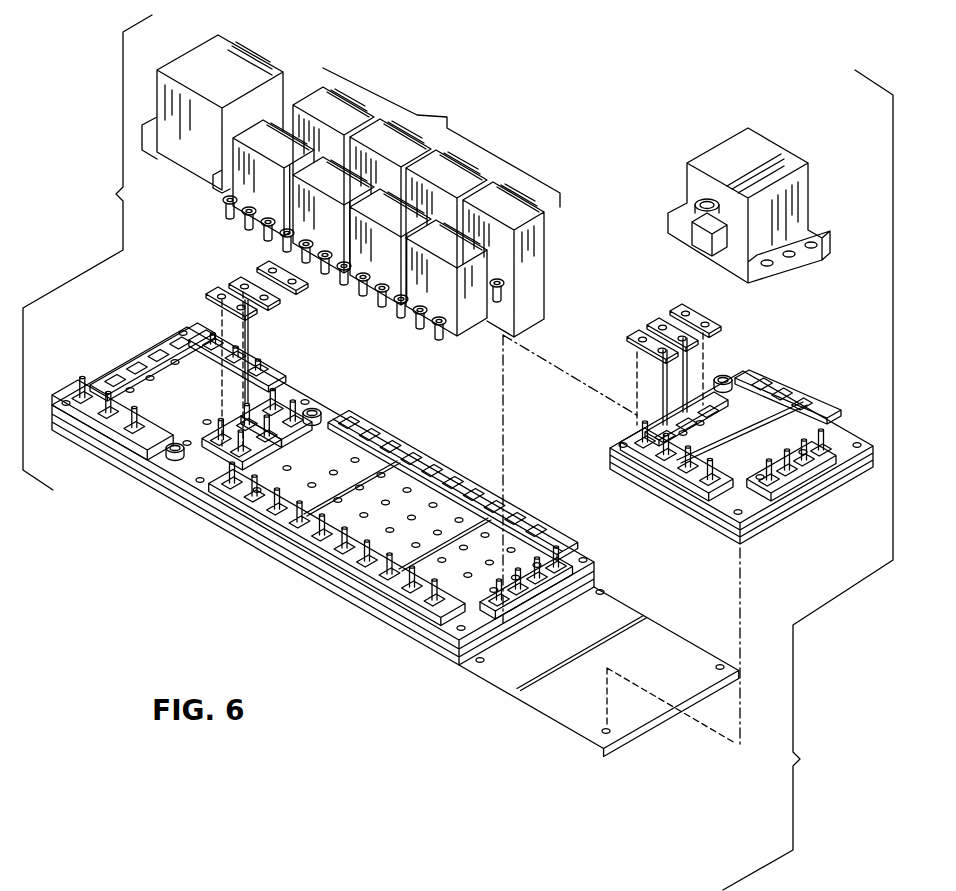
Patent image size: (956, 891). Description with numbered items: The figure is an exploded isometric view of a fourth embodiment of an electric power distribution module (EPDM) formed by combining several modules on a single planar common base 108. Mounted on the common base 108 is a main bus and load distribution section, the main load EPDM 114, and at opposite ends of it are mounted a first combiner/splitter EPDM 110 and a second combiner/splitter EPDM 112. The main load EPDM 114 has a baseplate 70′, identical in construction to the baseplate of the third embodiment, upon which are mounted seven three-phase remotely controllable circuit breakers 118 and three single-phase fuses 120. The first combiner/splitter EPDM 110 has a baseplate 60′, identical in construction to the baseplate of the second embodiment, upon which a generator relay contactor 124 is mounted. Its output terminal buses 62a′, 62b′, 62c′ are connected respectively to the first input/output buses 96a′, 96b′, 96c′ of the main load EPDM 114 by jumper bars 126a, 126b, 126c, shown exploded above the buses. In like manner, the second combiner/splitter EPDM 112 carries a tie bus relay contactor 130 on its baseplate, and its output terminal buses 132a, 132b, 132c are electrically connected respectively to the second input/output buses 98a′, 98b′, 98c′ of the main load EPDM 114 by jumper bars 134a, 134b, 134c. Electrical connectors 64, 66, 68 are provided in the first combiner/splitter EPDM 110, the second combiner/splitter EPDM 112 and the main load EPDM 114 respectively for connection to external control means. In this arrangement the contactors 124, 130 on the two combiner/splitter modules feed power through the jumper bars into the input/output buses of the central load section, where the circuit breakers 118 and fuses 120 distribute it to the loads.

The baseplate 60′ is at (80, 397).
The output terminal bus 62a′ is at (327, 446).
The output terminal bus 62b′ is at (247, 420).
The output terminal bus 62c′ is at (228, 447).
The electrical connector 64 is at (173, 460).
The electrical connector 66 is at (724, 373).
The electrical connector 68 is at (322, 410).
The baseplate 70′ is at (440, 636).
The first input/output bus 96a′ is at (398, 440).
The first input/output bus 96b′ is at (283, 448).
The first input/output bus 96c′ is at (247, 452).
The second input/output bus 98a′ is at (545, 592).
The second input/output bus 98b′ is at (540, 610).
The second input/output bus 98c′ is at (503, 603).
The common base 108 is at (576, 724).
The first combiner/splitter EPDM 110 is at (87, 252).
The second combiner/splitter EPDM 112 is at (808, 480).
The main load EPDM 114 is at (441, 137).
The remotely controllable circuit breaker 118 is at (390, 135).
The single-phase fuse 120 is at (470, 300).
The generator relay contactor 124 is at (235, 50).
The jumper bar 126a is at (262, 270).
The jumper bar 126b is at (232, 286).
The jumper bar 126c is at (208, 297).
The tie bus relay contactor 130 is at (712, 150).
The output terminal bus 132a is at (805, 413).
The output terminal bus 132b is at (642, 414).
The output terminal bus 132c is at (655, 419).
The jumper bar 134a is at (695, 306).
The jumper bar 134b is at (657, 326).
The jumper bar 134c is at (637, 338).